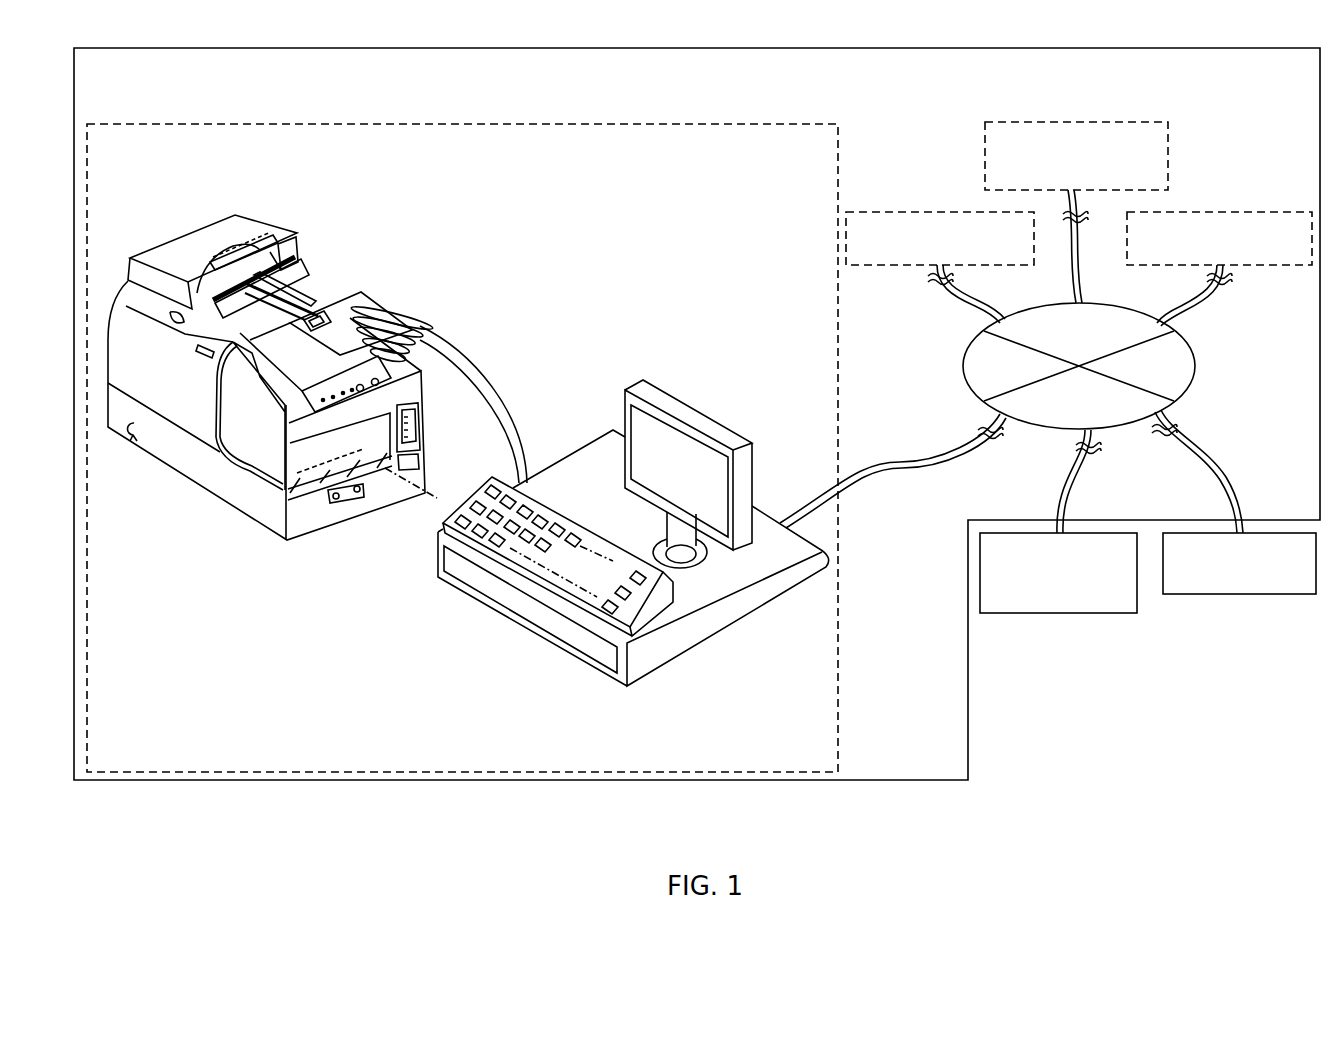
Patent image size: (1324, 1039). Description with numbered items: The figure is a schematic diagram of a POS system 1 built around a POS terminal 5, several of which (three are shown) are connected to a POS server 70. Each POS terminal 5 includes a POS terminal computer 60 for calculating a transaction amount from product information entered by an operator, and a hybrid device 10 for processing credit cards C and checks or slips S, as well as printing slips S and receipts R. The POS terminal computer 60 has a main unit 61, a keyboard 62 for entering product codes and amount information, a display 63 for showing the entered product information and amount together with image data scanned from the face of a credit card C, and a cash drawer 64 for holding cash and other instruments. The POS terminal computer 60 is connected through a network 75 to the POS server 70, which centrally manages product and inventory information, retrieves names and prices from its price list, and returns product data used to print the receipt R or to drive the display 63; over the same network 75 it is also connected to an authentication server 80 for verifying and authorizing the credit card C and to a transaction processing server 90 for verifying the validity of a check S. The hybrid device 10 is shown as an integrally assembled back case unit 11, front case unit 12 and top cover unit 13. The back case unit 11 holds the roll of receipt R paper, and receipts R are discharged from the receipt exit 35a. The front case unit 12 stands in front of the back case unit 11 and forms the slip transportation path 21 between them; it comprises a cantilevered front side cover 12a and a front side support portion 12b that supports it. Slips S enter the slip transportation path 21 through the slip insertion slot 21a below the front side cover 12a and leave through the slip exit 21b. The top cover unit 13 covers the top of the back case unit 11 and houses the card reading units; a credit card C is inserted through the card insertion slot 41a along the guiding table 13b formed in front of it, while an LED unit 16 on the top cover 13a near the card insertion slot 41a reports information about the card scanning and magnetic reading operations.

The POS system 1 is at (968, 718).
The POS terminal 5 is at (722, 124).
The hybrid device 10 is at (312, 409).
The back case unit 11 is at (315, 396).
The front case unit 12 is at (318, 506).
The front side cover 12a is at (262, 420).
The front side support portion 12b is at (396, 455).
The top cover unit 13 is at (237, 230).
The top cover 13a is at (158, 244).
The table 13b is at (272, 250).
The LED unit 16 is at (302, 245).
The slip transportation path 21 is at (208, 400).
The slip insertion slot 21a is at (334, 456).
The slip exit 21b is at (320, 297).
The receipt exit 35a is at (237, 293).
The card insertion slot 41a is at (258, 256).
The POS terminal computer 60 is at (616, 500).
The main unit 61 is at (768, 582).
The keyboard 62 is at (557, 562).
The display 63 is at (708, 462).
The cash drawer 64 is at (471, 577).
The POS server 70 is at (1082, 122).
The network 75 is at (965, 386).
The authentication server 80 is at (1240, 594).
The transaction processing server 90 is at (1058, 613).
The receipt R is at (188, 322).
The credit card C is at (365, 338).
The slip S is at (428, 500).